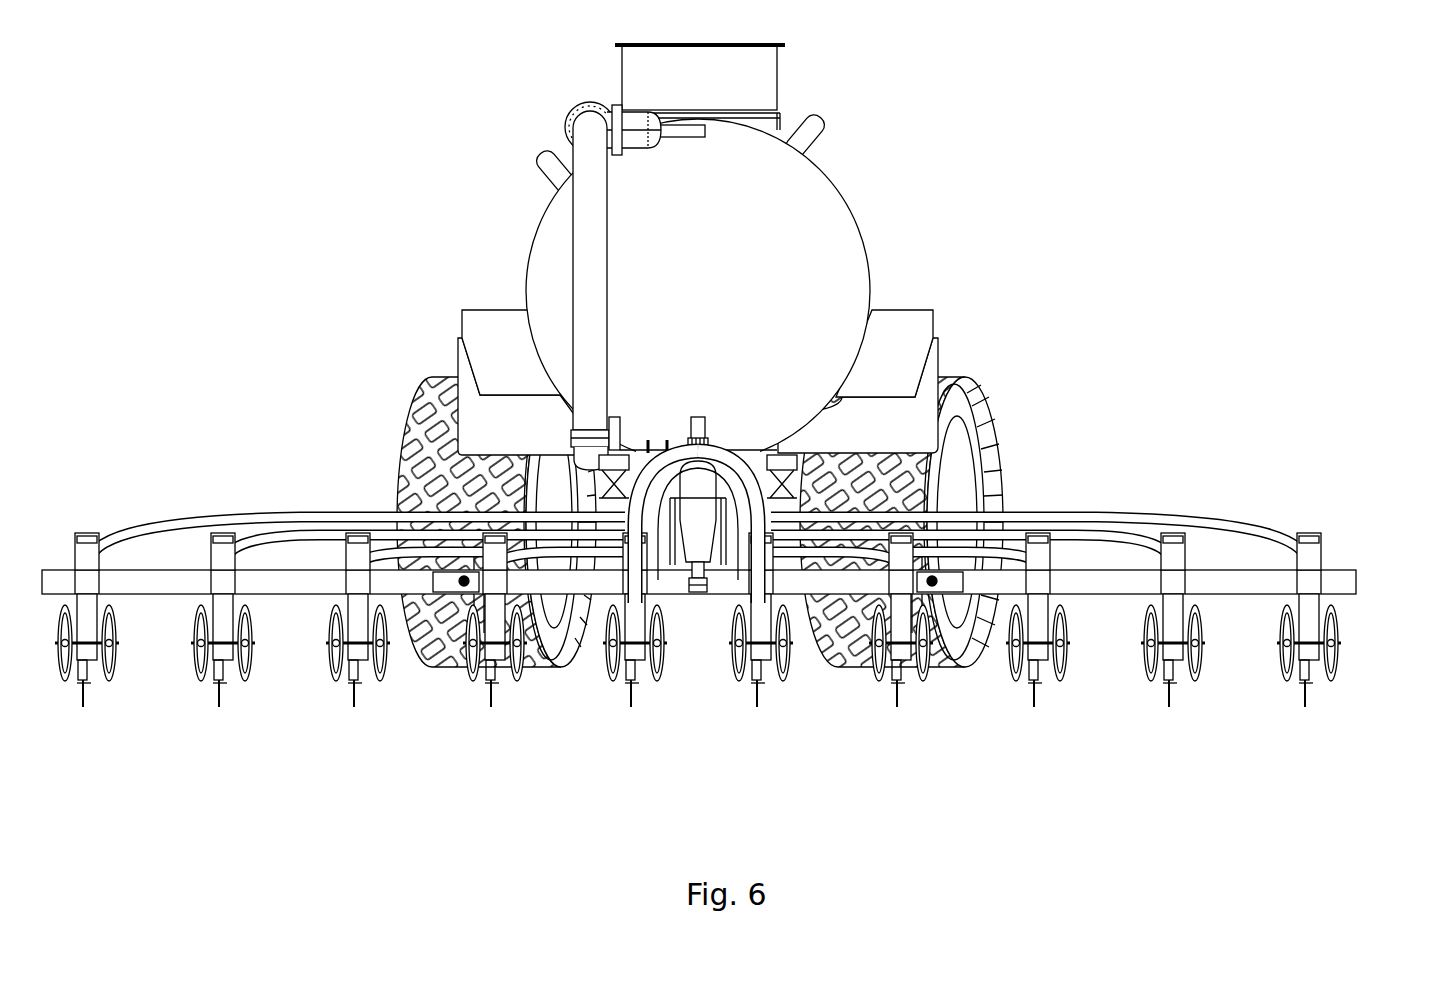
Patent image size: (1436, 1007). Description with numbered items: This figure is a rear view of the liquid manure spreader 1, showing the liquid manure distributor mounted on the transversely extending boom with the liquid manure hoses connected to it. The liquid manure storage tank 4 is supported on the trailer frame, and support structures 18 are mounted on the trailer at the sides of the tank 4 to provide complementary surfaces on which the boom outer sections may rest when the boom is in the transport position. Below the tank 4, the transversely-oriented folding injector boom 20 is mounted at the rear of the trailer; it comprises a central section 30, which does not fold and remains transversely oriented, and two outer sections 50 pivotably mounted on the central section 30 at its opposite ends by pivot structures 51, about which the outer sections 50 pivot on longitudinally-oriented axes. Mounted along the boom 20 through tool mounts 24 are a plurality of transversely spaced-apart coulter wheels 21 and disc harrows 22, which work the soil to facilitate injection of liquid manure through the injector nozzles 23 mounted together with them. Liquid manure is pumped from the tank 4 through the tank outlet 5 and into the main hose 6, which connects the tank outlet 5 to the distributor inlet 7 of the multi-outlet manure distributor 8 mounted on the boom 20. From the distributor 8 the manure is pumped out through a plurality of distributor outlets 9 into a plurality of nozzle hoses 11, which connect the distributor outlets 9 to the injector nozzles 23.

The liquid manure spreader 1 is at (346, 213).
The liquid manure storage tank 4 is at (832, 196).
The tank outlet 5 is at (587, 102).
The main hose 6 is at (581, 232).
The distributor inlet 7 is at (600, 443).
The multi-outlet manure distributor 8 is at (703, 485).
The distributor outlet 9 is at (690, 458).
The nozzle hose 11 is at (643, 598).
The support structure 18 is at (503, 318).
The folding injector boom 20 is at (703, 623).
The coulter wheel 21 is at (662, 663).
The disc harrow 22 is at (622, 693).
The injector nozzle 23 is at (636, 647).
The tool mount 24 is at (1313, 562).
The central section 30 is at (720, 592).
The outer section 50 is at (48, 576).
The pivot structure 51 is at (437, 660).